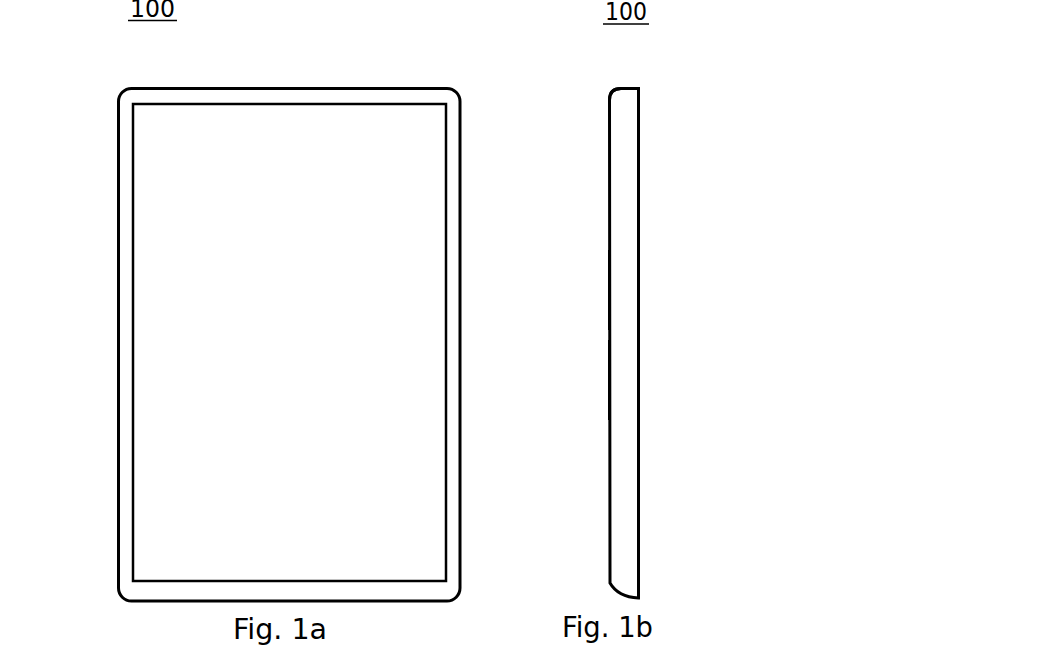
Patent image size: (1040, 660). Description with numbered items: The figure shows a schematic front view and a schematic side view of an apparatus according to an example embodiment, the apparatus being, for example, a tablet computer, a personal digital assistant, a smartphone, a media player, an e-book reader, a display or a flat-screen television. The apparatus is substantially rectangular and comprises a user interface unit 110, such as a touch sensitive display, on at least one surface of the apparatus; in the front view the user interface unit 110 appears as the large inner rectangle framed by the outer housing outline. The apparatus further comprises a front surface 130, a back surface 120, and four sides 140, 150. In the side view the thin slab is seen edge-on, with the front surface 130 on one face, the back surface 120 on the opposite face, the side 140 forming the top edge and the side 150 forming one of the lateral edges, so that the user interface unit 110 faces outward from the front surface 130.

In FIG. 1A, the user interface unit 110 is at (339, 331).
In FIG. 1B, the back surface 120 is at (558, 382).
In FIG. 1B, the front surface 130 is at (680, 344).
In FIG. 1A, the side 140 is at (290, 320).
In FIG. 1B, the side 140 is at (670, 71).
In FIG. 1A, the side 150 is at (66, 345).
In FIG. 1B, the side 150 is at (674, 290).